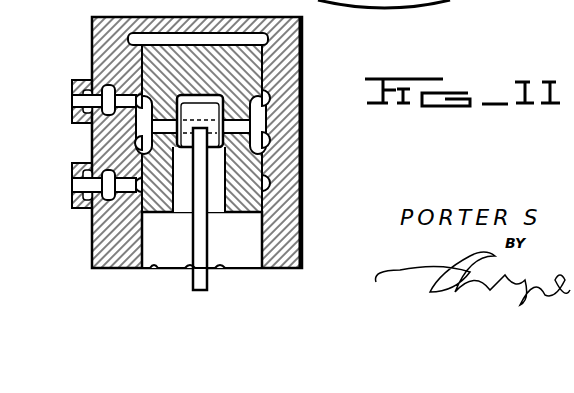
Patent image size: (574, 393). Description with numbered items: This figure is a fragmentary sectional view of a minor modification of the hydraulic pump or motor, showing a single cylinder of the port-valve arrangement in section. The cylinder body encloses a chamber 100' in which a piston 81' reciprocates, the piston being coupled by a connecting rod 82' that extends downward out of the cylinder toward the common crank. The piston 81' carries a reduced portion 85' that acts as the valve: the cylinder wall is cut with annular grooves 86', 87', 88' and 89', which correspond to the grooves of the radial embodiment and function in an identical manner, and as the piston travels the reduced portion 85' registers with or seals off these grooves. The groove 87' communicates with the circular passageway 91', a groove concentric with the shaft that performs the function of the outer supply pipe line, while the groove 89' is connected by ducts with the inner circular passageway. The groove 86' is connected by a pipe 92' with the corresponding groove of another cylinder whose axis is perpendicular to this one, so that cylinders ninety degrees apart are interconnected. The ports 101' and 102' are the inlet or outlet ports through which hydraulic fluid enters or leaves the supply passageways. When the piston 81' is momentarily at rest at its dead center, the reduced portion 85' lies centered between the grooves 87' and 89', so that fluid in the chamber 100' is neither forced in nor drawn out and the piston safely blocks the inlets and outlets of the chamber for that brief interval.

The valve housing 100' is at (197, 134).
The annular groove 86' is at (243, 44).
The annular groove 87' is at (305, 93).
The annular groove 88' is at (316, 142).
The annular groove 89' is at (310, 188).
The lower cavity 81' is at (202, 240).
The valve rod 82' is at (178, 221).
The circular passageway 91' is at (88, 53).
The upper bolt head 101' is at (47, 85).
The upper nut 85' is at (70, 111).
The lower bolt head 102' is at (58, 177).
The lower bolt 92' is at (86, 222).